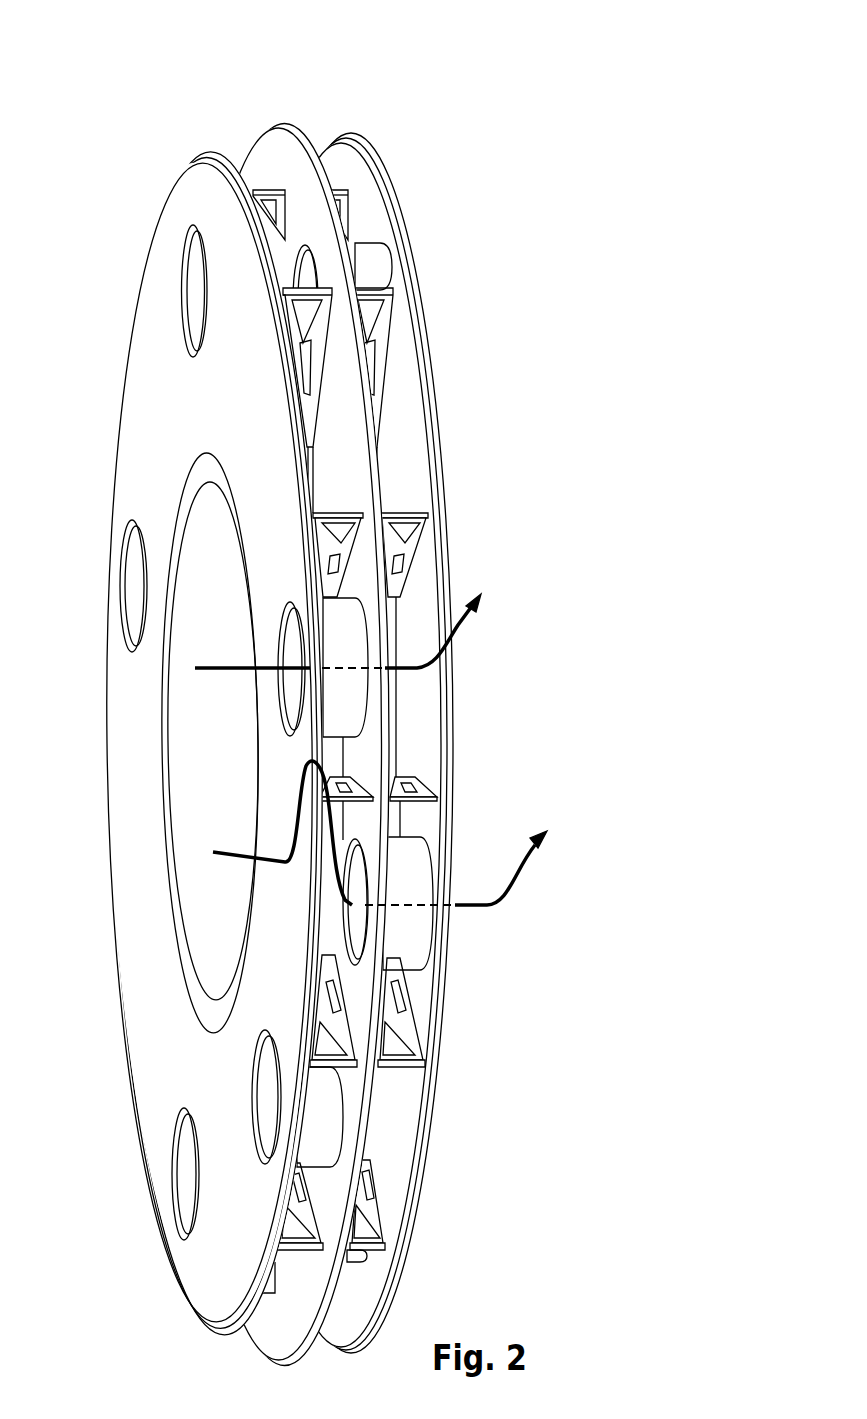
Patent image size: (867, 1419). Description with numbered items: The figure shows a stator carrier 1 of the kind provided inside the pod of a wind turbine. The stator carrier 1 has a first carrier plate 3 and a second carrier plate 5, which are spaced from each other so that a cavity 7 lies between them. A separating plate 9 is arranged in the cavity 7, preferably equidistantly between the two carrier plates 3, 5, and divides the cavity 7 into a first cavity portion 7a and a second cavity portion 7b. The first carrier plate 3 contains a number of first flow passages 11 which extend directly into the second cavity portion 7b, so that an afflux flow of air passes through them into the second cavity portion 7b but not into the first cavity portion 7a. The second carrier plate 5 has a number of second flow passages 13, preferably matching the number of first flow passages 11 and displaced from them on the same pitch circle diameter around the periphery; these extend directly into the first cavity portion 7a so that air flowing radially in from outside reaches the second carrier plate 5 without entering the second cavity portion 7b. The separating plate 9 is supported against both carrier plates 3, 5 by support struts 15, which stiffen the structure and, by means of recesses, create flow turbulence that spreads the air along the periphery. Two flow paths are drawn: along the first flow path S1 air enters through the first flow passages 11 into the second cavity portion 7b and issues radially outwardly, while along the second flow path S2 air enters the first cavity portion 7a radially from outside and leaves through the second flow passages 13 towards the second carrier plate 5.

The stator carrier 1 is at (133, 147).
The first carrier plate 3 is at (142, 405).
The second carrier plate 5 is at (402, 415).
The cavity 7 is at (323, 628).
The first cavity portion 7a is at (262, 150).
The second cavity portion 7b is at (362, 661).
The separating plate 9 is at (347, 467).
The first flow passages 11 is at (187, 290).
The second flow passages 13 is at (363, 267).
The support struts 15 is at (310, 370).
The first flow path S1 is at (223, 667).
The second flow path S2 is at (228, 853).